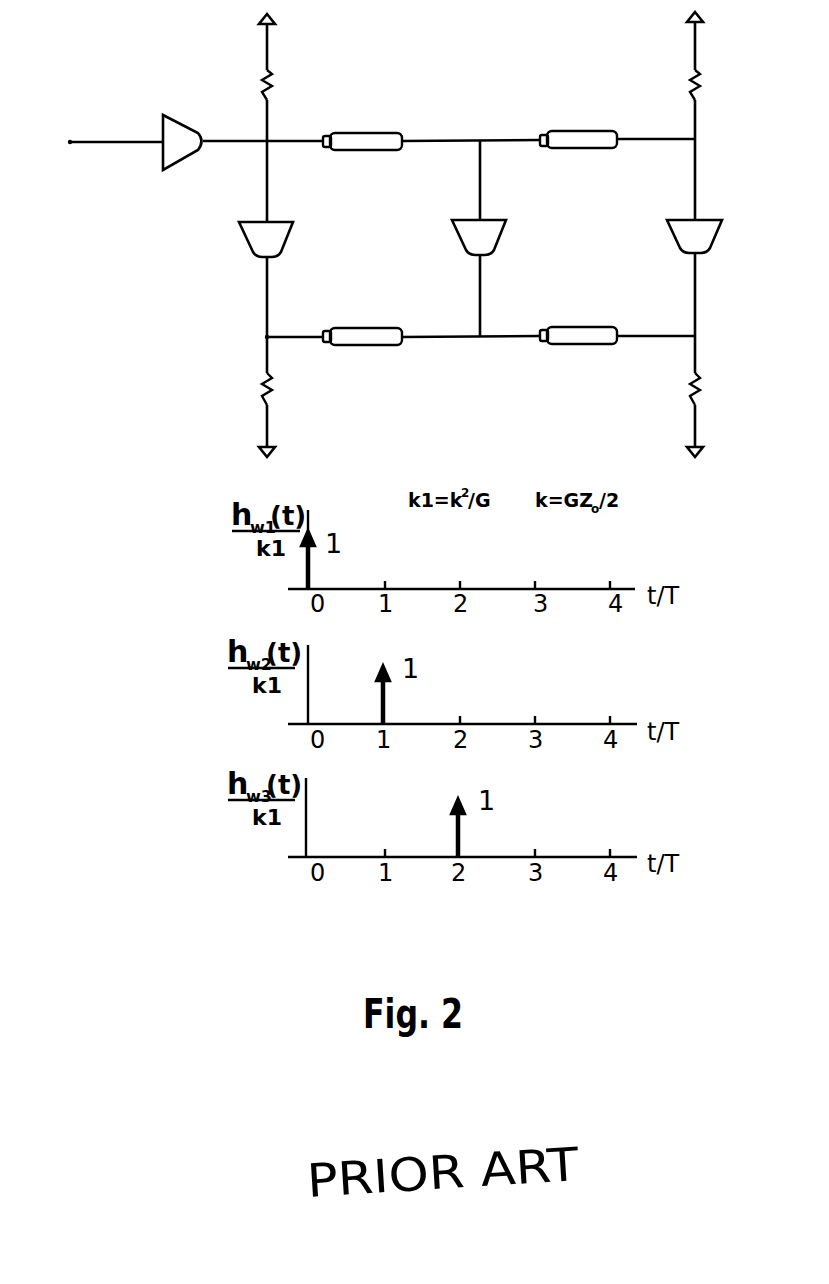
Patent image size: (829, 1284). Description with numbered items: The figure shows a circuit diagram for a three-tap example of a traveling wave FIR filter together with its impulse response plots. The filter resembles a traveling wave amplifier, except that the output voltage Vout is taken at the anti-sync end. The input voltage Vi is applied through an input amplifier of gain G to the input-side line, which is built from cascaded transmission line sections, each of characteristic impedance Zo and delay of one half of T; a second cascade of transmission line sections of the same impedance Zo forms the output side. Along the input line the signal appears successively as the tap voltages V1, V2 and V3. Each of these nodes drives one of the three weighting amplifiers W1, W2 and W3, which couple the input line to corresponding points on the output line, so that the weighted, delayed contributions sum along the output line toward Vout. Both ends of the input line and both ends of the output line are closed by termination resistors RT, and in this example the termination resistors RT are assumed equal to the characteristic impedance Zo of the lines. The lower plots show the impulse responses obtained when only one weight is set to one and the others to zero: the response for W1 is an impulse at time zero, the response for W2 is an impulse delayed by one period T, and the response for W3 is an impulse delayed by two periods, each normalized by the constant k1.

The input amplifier G is at (182, 127).
The termination resistor RT is at (502, 236).
The transmission line Zo is at (475, 216).
The first tap weight amplifier W1 is at (280, 238).
The second tap weight amplifier W2 is at (493, 237).
The third tap weight amplifier W3 is at (709, 236).
The input voltage Vi is at (68, 146).
The first tap voltage V1 is at (240, 156).
The second tap voltage V2 is at (451, 156).
The third tap voltage V3 is at (671, 154).
The output voltage Vout is at (224, 334).